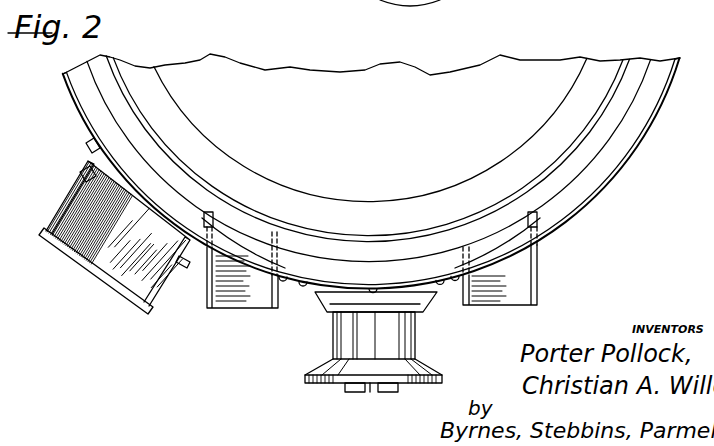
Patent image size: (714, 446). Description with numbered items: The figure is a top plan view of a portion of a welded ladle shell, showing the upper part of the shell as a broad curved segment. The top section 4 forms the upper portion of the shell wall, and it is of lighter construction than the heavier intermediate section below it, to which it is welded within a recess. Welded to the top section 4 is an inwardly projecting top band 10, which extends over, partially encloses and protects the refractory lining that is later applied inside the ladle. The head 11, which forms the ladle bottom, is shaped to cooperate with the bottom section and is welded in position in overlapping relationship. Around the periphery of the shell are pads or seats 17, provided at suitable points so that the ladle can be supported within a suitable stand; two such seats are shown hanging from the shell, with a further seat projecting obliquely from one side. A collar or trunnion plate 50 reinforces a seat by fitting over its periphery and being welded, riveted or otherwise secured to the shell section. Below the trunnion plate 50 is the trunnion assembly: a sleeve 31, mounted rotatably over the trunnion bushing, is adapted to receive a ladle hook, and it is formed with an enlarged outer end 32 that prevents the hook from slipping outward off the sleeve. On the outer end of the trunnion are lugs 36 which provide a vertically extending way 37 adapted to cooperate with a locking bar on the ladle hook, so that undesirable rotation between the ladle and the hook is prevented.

The top section 4 is at (668, 87).
The top band 10 is at (663, 61).
The head 11 is at (600, 64).
The pads or seats 17 is at (208, 295).
The collar or trunnion plate 50 is at (327, 302).
The sleeve 31 is at (402, 343).
The enlarged outer end 32 is at (440, 375).
The lugs 36 is at (357, 392).
The way 37 is at (370, 393).